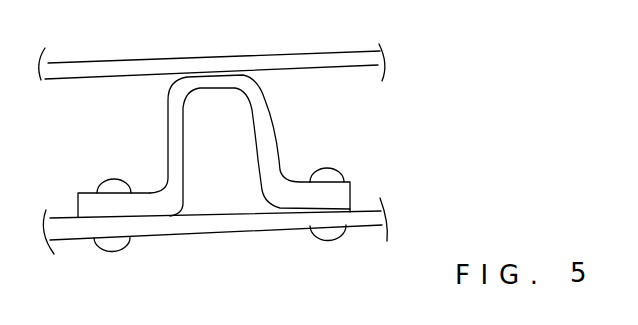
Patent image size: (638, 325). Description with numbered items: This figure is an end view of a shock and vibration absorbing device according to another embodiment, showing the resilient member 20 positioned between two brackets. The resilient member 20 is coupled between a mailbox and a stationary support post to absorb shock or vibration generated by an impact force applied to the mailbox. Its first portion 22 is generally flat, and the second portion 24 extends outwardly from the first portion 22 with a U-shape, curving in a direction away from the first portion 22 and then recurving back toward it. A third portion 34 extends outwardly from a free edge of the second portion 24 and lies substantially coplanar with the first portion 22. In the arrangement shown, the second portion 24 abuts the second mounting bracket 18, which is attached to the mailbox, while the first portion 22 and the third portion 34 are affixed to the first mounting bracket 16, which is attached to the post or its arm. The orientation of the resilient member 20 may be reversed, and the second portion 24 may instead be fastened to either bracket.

The first mounting bracket 16 is at (362, 228).
The second mounting bracket 18 is at (365, 44).
The resilient member 20 is at (285, 162).
The first portion 22 is at (340, 190).
The second portion 24 is at (267, 128).
The third portion 34 is at (140, 202).